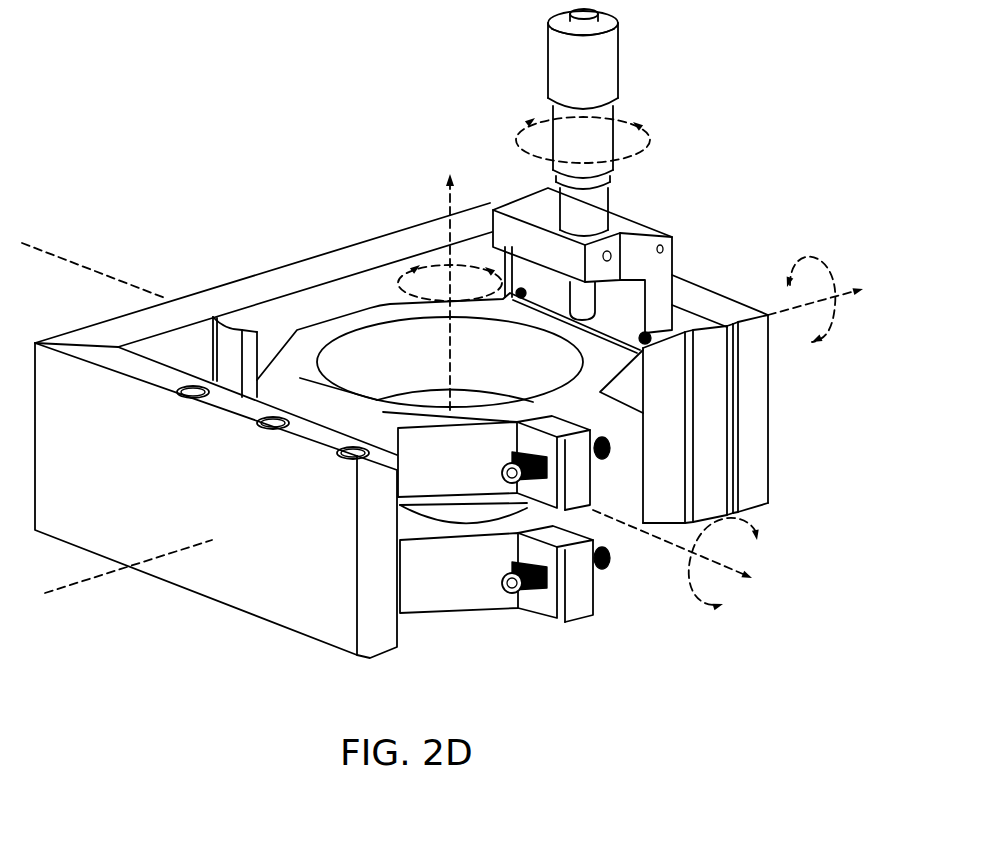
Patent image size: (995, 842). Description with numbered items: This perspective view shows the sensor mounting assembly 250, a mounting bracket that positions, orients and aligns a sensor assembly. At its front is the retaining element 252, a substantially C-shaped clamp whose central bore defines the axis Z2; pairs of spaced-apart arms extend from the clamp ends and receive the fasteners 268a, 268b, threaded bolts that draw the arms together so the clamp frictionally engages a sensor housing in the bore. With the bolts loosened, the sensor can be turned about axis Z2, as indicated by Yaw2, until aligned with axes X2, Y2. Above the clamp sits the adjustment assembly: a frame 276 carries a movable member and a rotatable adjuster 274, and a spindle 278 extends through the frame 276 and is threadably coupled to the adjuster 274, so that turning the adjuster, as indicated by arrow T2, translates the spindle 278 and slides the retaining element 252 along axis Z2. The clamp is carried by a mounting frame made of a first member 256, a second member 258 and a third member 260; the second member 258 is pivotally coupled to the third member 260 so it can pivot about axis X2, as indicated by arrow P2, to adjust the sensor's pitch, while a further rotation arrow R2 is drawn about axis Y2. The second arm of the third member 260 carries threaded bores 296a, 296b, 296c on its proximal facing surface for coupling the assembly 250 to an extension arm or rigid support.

The sensor mounting assembly 250 is at (197, 110).
The retaining element 252 is at (488, 625).
The first member 256 is at (710, 458).
The second member 258 is at (758, 415).
The third member 260 is at (232, 282).
The fastener 268a is at (500, 468).
The fastener 268b is at (500, 580).
The rotatable adjuster 274 is at (620, 53).
The frame 276 is at (662, 230).
The spindle 278 is at (587, 295).
The bore 296a is at (160, 385).
The bore 296b is at (240, 415).
The bore 296c is at (322, 450).
The axis Z2 is at (448, 195).
The yaw rotation arrow Yaw2 is at (400, 268).
The adjuster rotation arrow T2 is at (650, 126).
The axis Y2 is at (840, 283).
The roll rotation R2 is at (827, 250).
The axis X2 is at (725, 556).
The pitch rotation arrow P2 is at (700, 607).